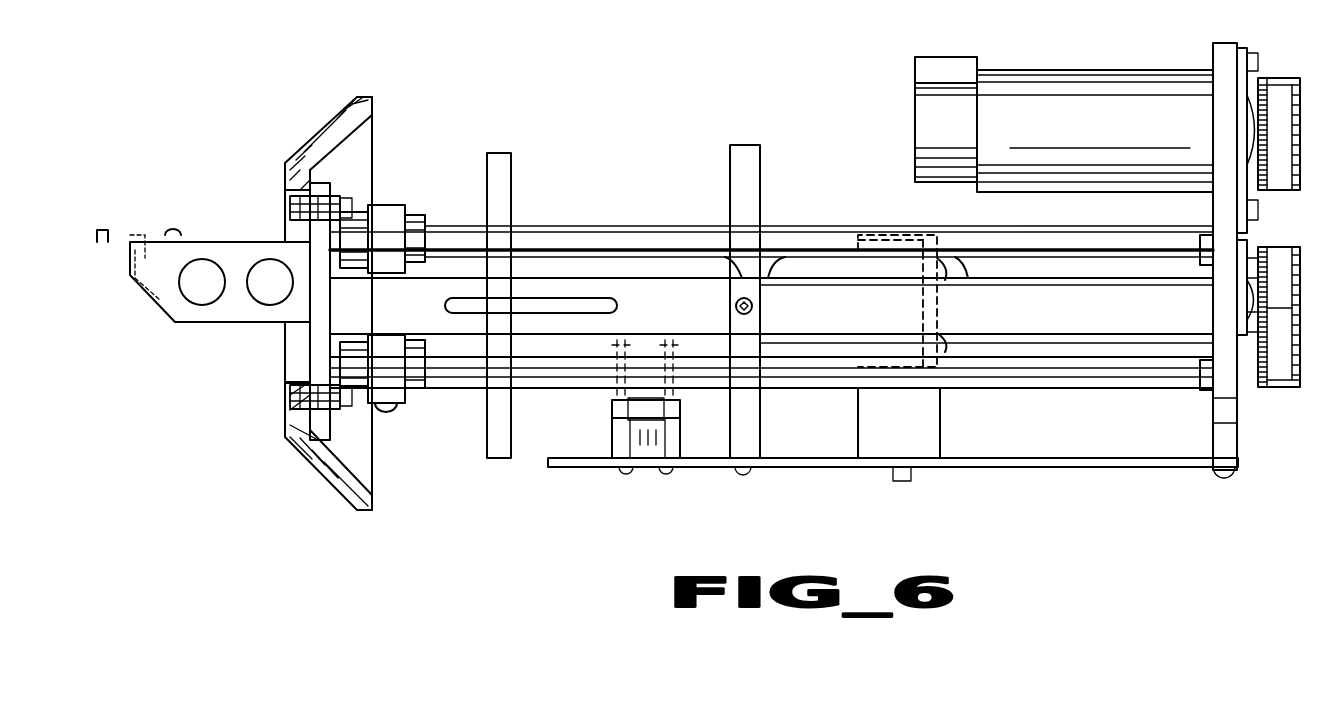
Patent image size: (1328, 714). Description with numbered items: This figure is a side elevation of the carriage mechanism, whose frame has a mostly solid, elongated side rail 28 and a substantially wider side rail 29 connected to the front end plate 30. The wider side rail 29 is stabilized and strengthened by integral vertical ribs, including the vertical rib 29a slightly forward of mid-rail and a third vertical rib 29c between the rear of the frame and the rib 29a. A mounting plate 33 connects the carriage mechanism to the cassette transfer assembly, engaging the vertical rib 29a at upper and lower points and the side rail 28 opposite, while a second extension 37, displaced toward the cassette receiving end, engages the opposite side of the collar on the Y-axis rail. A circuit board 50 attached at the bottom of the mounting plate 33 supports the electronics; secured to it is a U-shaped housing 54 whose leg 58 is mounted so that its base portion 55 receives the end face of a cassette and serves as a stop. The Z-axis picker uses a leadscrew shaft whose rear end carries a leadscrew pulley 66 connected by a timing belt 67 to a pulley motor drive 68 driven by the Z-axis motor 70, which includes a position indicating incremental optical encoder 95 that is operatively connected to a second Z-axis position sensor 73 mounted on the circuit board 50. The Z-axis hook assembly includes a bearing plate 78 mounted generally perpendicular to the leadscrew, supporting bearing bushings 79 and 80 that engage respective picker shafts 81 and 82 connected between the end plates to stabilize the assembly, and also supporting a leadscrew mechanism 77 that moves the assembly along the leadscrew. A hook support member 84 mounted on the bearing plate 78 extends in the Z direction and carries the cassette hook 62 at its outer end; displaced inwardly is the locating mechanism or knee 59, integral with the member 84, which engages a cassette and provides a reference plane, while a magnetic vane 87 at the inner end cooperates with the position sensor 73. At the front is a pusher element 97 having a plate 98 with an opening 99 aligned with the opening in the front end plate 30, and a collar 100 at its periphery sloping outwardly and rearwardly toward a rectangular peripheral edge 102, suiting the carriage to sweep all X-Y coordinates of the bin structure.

The side rail 28 is at (692, 316).
The side rail 29 is at (838, 225).
The vertical rib 29a is at (775, 260).
The third vertical rib 29c is at (975, 262).
The front end plate 30 is at (332, 183).
The mounting plate 33 is at (760, 158).
The second extension 37 is at (511, 165).
The circuit board 50 is at (826, 470).
The U-shaped housing 54 is at (940, 422).
The base portion 55 is at (945, 318).
The leg 58 is at (888, 242).
The locating mechanism 59 is at (148, 305).
The cassette hook 62 is at (110, 235).
The leadscrew pulley 66 is at (1302, 348).
The timing belt 67 is at (1280, 200).
The pulley motor drive 68 is at (1300, 85).
The Z-axis motor 70 is at (1095, 140).
The second Z-axis position sensor 73 is at (646, 399).
The leadscrew mechanism 77 is at (383, 268).
The bearing plate 78 is at (395, 205).
The bearing bushing 79 is at (418, 215).
The bearing bushing 80 is at (425, 390).
The picker shaft 81 is at (565, 232).
The picker shaft 82 is at (542, 370).
The hook support member 84 is at (215, 242).
The magnetic vane 87 is at (650, 340).
The incremental optical encoder 95 is at (955, 142).
The pusher element 97 is at (320, 109).
The plate 98 is at (283, 178).
The opening 99 is at (285, 350).
The collar 100 is at (300, 133).
The rectangular peripheral edge 102 is at (362, 97).